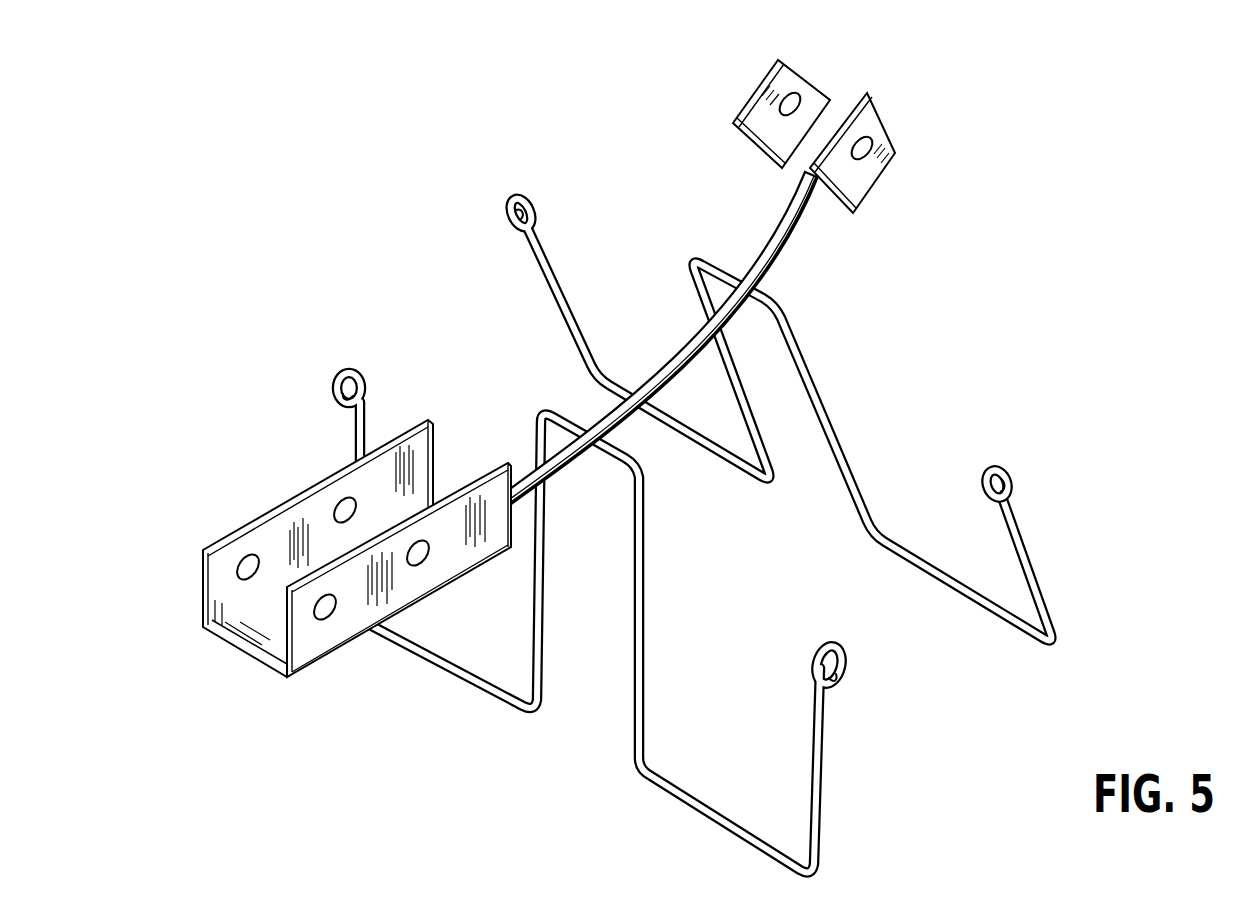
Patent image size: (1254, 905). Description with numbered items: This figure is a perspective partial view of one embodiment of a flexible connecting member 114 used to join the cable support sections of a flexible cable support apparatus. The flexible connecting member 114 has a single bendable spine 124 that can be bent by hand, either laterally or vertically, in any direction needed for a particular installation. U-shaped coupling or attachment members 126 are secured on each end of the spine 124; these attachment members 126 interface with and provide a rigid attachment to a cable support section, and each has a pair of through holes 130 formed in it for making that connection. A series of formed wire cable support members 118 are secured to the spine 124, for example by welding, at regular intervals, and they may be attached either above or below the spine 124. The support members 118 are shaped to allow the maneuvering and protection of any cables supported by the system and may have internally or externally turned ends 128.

The flexible connecting member 114 is at (629, 468).
The cable support member 118 is at (826, 410).
The bendable spine 124 is at (798, 237).
The U-shaped attachment member 126 is at (857, 192).
The turned end 128 is at (990, 468).
The through hole 130 is at (423, 556).